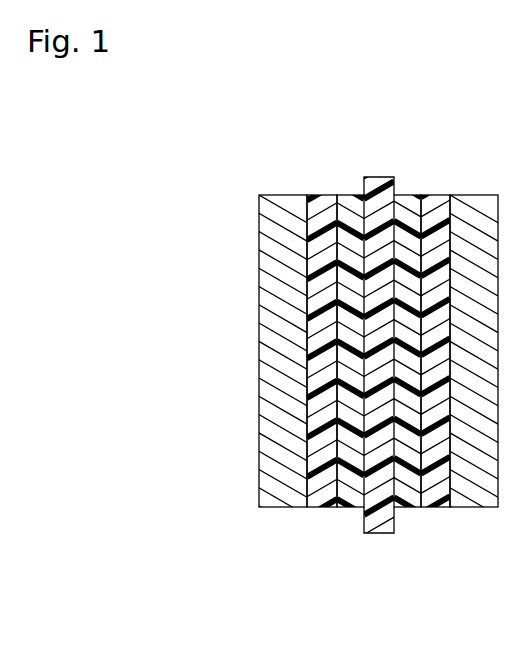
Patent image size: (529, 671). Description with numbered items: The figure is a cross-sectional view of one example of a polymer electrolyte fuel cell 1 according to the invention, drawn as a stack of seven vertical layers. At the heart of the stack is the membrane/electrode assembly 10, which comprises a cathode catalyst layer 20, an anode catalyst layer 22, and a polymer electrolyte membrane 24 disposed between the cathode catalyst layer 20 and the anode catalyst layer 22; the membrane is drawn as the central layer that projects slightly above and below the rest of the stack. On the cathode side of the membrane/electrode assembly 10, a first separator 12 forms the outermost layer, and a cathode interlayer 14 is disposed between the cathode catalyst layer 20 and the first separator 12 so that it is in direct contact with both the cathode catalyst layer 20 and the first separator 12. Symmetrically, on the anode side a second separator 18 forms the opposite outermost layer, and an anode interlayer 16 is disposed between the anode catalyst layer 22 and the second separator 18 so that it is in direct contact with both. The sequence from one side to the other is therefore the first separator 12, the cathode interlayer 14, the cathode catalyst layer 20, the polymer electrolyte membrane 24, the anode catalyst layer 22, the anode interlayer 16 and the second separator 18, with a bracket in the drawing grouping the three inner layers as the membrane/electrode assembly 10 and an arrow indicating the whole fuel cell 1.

The polymer electrolyte fuel cell 1 is at (423, 168).
The membrane/electrode assembly 10 is at (378, 400).
The first separator 12 is at (283, 497).
The cathode interlayer 14 is at (323, 497).
The anode interlayer 16 is at (435, 497).
The second separator 18 is at (473, 497).
The cathode catalyst layer 20 is at (350, 497).
The anode catalyst layer 22 is at (407, 497).
The polymer electrolyte membrane 24 is at (379, 519).